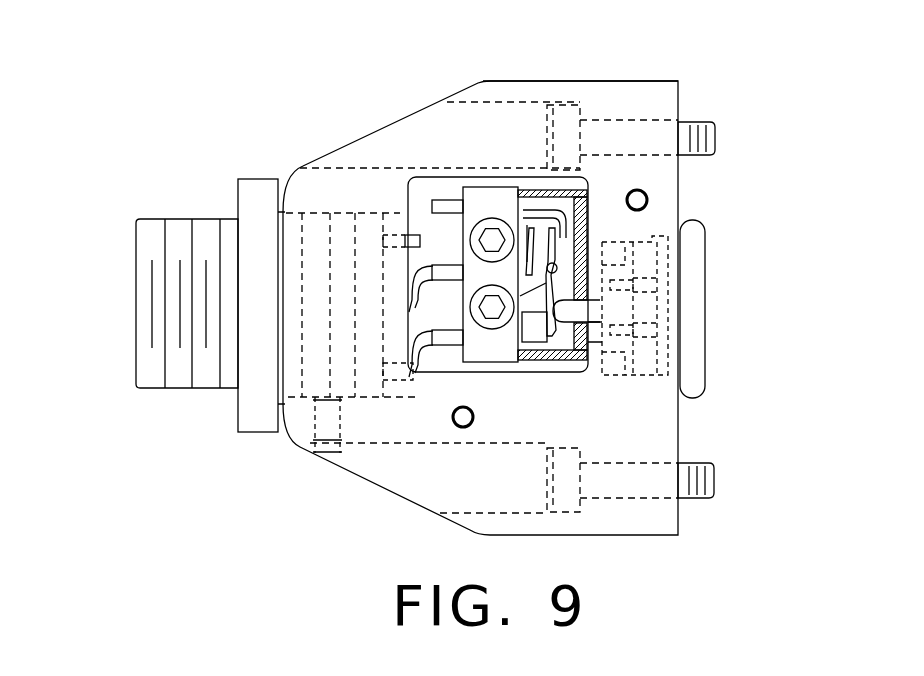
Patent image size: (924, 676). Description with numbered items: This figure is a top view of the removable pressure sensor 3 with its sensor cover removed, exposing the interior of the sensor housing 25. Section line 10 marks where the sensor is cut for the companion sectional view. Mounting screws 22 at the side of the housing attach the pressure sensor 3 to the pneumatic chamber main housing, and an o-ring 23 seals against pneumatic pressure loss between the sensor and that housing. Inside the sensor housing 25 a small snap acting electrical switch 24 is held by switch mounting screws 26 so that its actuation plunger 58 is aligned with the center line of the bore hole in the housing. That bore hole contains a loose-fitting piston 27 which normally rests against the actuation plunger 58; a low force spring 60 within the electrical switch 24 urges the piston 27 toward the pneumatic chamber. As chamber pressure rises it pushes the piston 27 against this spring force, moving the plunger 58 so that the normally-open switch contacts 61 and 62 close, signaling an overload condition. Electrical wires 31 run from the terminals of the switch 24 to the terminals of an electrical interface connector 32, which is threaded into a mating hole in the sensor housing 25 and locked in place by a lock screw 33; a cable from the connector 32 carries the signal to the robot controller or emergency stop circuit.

The pressure sensor 3 is at (472, 76).
The section line 10 is at (48, 305).
The mounting screws 22 is at (702, 122).
The o-ring 23 is at (693, 353).
The snap acting electrical switch 24 is at (510, 198).
The sensor housing 25 is at (397, 143).
The switch mounting screws 26 is at (493, 235).
The piston 27 is at (645, 363).
The electrical wires 31 is at (410, 350).
The electrical interface connector 32 is at (187, 238).
The lock screw 33 is at (322, 453).
The actuation plunger 58 is at (573, 312).
The low force spring 60 is at (547, 283).
The normally-open electrical switch contact 61 is at (585, 193).
The normally-open electrical switch contact 62 is at (536, 233).